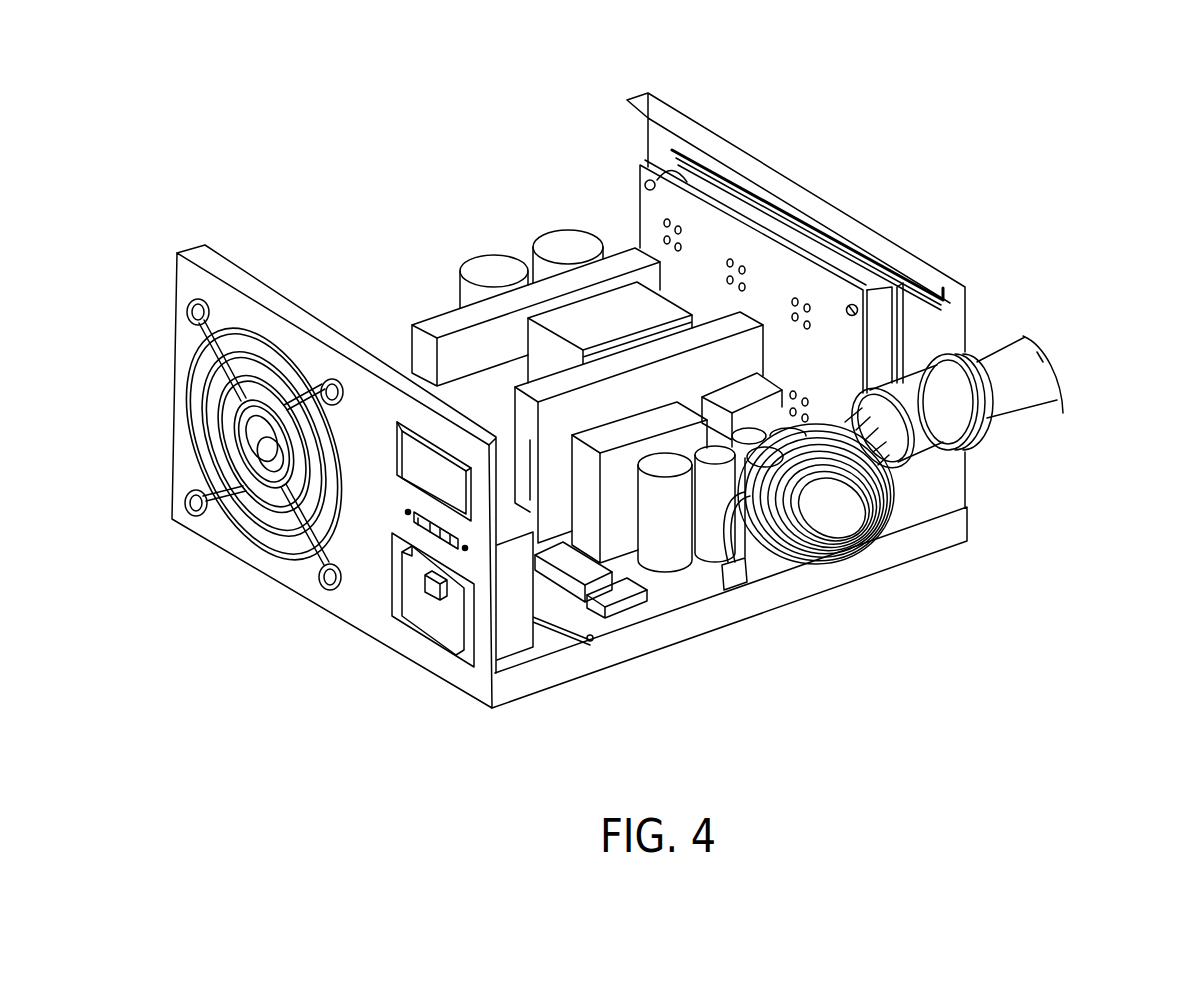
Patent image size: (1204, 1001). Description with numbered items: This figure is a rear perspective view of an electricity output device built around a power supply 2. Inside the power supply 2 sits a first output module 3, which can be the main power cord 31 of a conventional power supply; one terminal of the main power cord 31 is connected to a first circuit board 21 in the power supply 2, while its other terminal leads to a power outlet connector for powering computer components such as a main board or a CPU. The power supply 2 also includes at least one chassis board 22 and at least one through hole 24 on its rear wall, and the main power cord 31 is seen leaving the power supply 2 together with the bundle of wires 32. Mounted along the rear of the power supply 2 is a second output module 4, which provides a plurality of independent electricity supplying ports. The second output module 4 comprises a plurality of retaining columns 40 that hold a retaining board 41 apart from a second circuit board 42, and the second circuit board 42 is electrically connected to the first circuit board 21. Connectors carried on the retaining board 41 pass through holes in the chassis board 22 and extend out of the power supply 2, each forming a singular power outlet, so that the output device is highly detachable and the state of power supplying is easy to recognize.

The power supply 2 is at (248, 283).
The first output module 3 is at (927, 453).
The second output module 4 is at (637, 143).
The first circuit board 21 is at (667, 588).
The chassis board 22 is at (818, 202).
The through hole 24 is at (953, 347).
The main power cord 31 is at (1018, 393).
The wires 32 is at (803, 540).
The retaining column 40 is at (880, 297).
The retaining board 41 is at (720, 197).
The second circuit board 42 is at (653, 215).